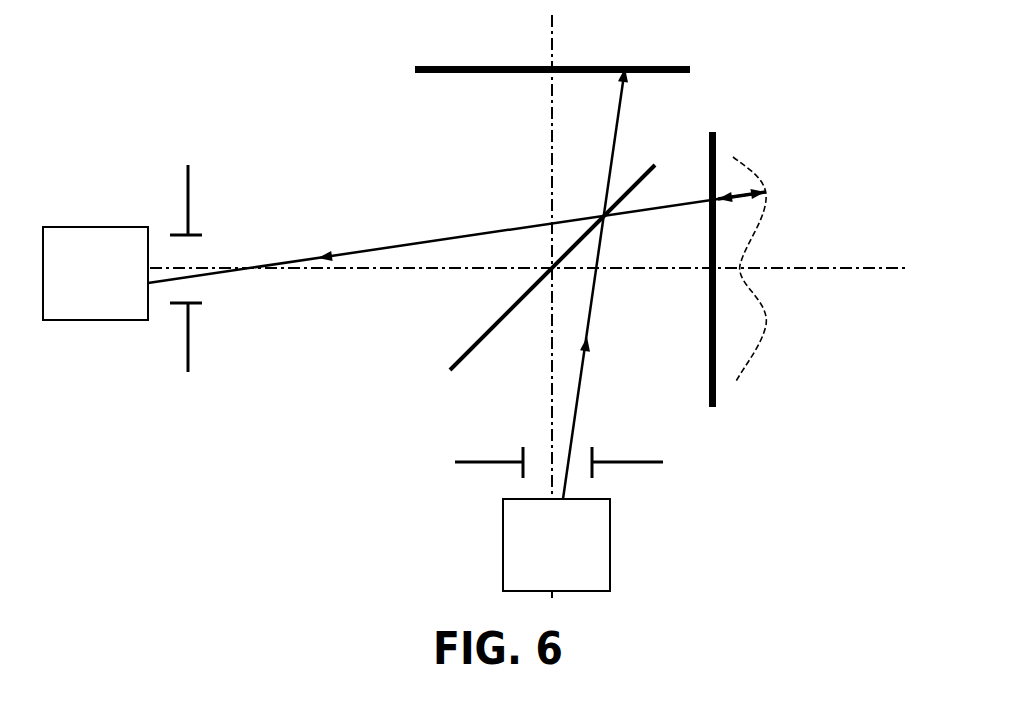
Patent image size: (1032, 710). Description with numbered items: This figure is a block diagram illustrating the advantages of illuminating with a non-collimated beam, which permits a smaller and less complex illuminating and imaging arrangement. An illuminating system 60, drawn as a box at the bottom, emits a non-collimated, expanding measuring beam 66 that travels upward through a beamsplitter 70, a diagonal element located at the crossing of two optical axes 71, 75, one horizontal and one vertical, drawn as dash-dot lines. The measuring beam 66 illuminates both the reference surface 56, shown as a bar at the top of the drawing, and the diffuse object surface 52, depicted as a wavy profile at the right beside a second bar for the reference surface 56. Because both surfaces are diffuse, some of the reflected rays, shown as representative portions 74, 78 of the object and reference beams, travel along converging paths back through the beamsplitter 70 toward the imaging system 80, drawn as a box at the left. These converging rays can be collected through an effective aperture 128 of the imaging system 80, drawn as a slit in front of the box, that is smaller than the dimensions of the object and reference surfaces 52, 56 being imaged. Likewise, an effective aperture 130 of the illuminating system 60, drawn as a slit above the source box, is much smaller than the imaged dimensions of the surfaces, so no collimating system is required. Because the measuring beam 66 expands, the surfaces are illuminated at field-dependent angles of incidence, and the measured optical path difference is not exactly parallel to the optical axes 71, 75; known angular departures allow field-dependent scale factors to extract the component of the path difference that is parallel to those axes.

The object surface 52 is at (746, 337).
The reference surface 56 is at (454, 77).
The illuminating system 60 is at (570, 561).
The measuring beam 66 is at (587, 374).
The beamsplitter 70 is at (488, 328).
The optical axis 71 is at (862, 266).
The representative portion of the object beam 74 is at (456, 236).
The optical axis 75 is at (552, 118).
The representative portion of the reference beam 78 is at (492, 230).
The imaging system 80 is at (109, 294).
The effective aperture 128 is at (193, 240).
The effective aperture 130 is at (525, 461).